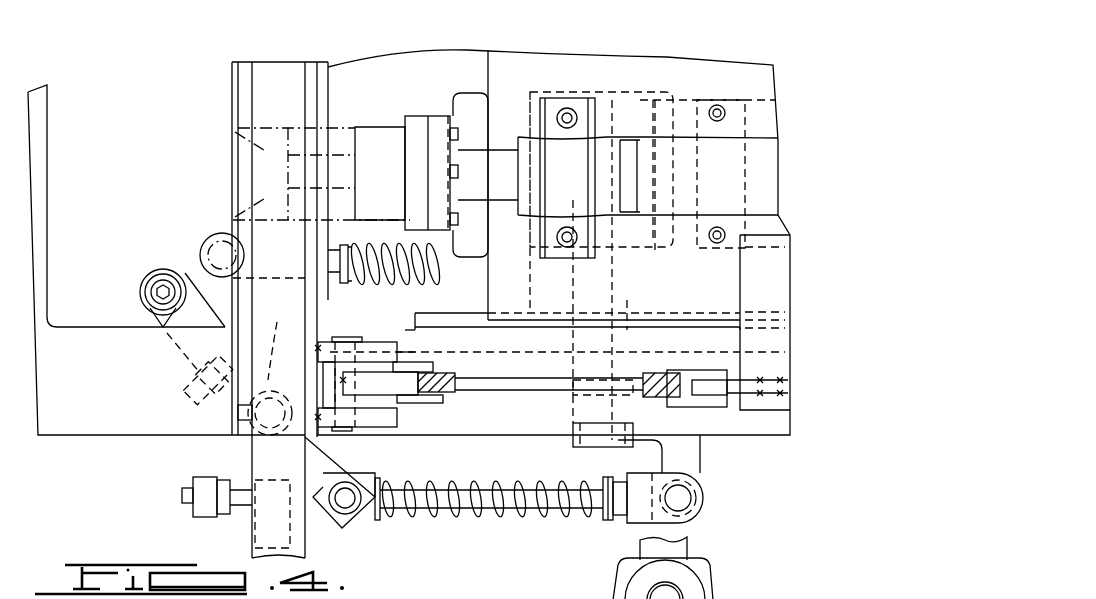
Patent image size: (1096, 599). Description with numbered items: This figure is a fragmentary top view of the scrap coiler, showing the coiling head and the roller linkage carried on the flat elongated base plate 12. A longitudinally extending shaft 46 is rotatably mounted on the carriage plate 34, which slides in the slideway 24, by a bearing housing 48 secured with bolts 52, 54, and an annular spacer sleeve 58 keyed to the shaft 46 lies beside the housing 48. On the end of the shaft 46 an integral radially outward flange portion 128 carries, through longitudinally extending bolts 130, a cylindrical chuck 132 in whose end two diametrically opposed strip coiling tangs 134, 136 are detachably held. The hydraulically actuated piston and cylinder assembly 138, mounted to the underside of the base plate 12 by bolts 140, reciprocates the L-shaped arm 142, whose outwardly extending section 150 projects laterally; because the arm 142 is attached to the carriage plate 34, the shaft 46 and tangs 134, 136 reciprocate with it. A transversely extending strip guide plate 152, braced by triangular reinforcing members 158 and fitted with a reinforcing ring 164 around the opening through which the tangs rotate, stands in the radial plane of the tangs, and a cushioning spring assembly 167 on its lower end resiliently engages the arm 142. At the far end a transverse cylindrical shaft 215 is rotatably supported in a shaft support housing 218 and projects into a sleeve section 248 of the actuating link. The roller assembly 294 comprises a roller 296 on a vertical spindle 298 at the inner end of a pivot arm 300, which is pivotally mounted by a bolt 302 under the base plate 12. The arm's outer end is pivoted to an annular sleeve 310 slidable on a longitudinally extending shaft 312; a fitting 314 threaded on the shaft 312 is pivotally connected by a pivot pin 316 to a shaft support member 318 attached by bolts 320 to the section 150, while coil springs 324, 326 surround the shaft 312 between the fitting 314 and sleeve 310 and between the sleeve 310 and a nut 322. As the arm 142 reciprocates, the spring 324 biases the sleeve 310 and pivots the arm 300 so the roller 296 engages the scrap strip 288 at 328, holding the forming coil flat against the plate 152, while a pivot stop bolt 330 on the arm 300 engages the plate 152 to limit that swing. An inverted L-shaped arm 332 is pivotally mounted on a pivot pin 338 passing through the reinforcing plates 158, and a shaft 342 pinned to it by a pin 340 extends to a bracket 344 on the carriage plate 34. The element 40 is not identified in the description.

The base plate 12 is at (390, 52).
The slideway 24 is at (745, 438).
The carriage plate 34 is at (487, 282).
The block 40 is at (412, 330).
The shaft 46 is at (472, 146).
The shaft support housing 48 is at (527, 218).
The bolt 52 is at (564, 248).
The bolt 54 is at (568, 108).
The annular spacer sleeve 58 is at (762, 220).
The flange portion 128 is at (437, 128).
The bolts 130 is at (466, 212).
The tool holder or chuck 132 is at (378, 125).
The strip coiling tang 134 is at (275, 125).
The strip coiling tang 136 is at (265, 195).
The piston and cylinder assembly 138 is at (736, 98).
The bolts 140 is at (712, 106).
The arm 142 is at (612, 290).
The outwardly extending section 150 is at (575, 422).
The strip guide plate 152 is at (310, 60).
The reinforcing member 158 is at (400, 351).
The reinforcing ring 164 is at (303, 90).
The cushioning spring assembly 167 is at (368, 240).
The shaft 215 is at (682, 586).
The shaft support housing 218 is at (740, 585).
The sleeve section 248 is at (579, 591).
The strip 288 is at (250, 165).
The roller assembly 294 is at (198, 245).
The roller 296 is at (163, 327).
The spindle 298 is at (140, 292).
The pivot arm 300 is at (223, 399).
The bolt 302 is at (280, 425).
The annular sleeve 310 is at (382, 522).
The shaft 312 is at (540, 512).
The fitting 314 is at (665, 524).
The pivot pin 316 is at (694, 500).
The shaft support member 318 is at (655, 453).
The bolts 320 is at (646, 389).
The nut 322 is at (206, 520).
The coil spring 324 is at (606, 507).
The coil spring 326 is at (314, 506).
The point of engagement 328 is at (252, 251).
The pivot stop bolt 330 is at (185, 392).
The inverted L-shaped arm 332 is at (374, 370).
The pivot pin 338 is at (350, 430).
The pin 340 is at (420, 399).
The shaft 342 is at (505, 380).
The bracket 344 is at (738, 338).